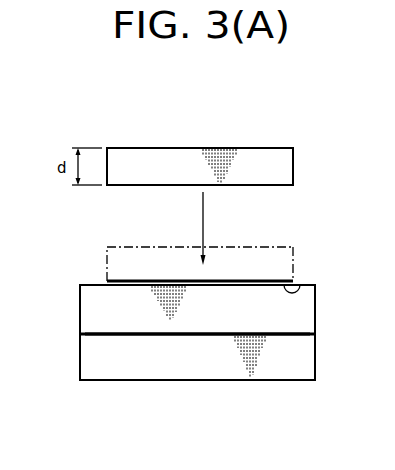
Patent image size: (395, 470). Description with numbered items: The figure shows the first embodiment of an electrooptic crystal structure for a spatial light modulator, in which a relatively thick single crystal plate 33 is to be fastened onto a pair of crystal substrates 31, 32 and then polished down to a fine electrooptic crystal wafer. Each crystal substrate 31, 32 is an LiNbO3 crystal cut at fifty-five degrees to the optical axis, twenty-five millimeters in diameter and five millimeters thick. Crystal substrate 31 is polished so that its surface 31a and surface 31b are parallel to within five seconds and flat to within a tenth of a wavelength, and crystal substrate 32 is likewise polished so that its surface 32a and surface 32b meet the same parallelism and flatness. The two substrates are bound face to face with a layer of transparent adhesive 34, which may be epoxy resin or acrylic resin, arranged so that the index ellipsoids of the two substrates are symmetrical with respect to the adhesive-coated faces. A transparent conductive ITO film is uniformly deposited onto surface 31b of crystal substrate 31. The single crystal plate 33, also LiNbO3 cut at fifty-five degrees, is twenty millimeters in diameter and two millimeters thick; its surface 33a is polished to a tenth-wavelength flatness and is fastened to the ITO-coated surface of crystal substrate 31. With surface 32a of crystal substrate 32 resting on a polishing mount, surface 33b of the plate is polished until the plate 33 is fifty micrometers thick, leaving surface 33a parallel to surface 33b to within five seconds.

The crystal substrate 31 is at (300, 310).
The surface of crystal substrate 31a is at (97, 334).
The surface of crystal substrate 31b is at (93, 284).
The crystal substrate 32 is at (308, 370).
The surface of crystal substrate 32a is at (130, 380).
The surface of crystal substrate 32b is at (97, 337).
The single crystal plate 33 is at (293, 165).
The surface of single crystal plate 33a is at (129, 186).
The surface of single crystal plate 33b is at (150, 148).
The transparent adhesive 34 is at (299, 283).